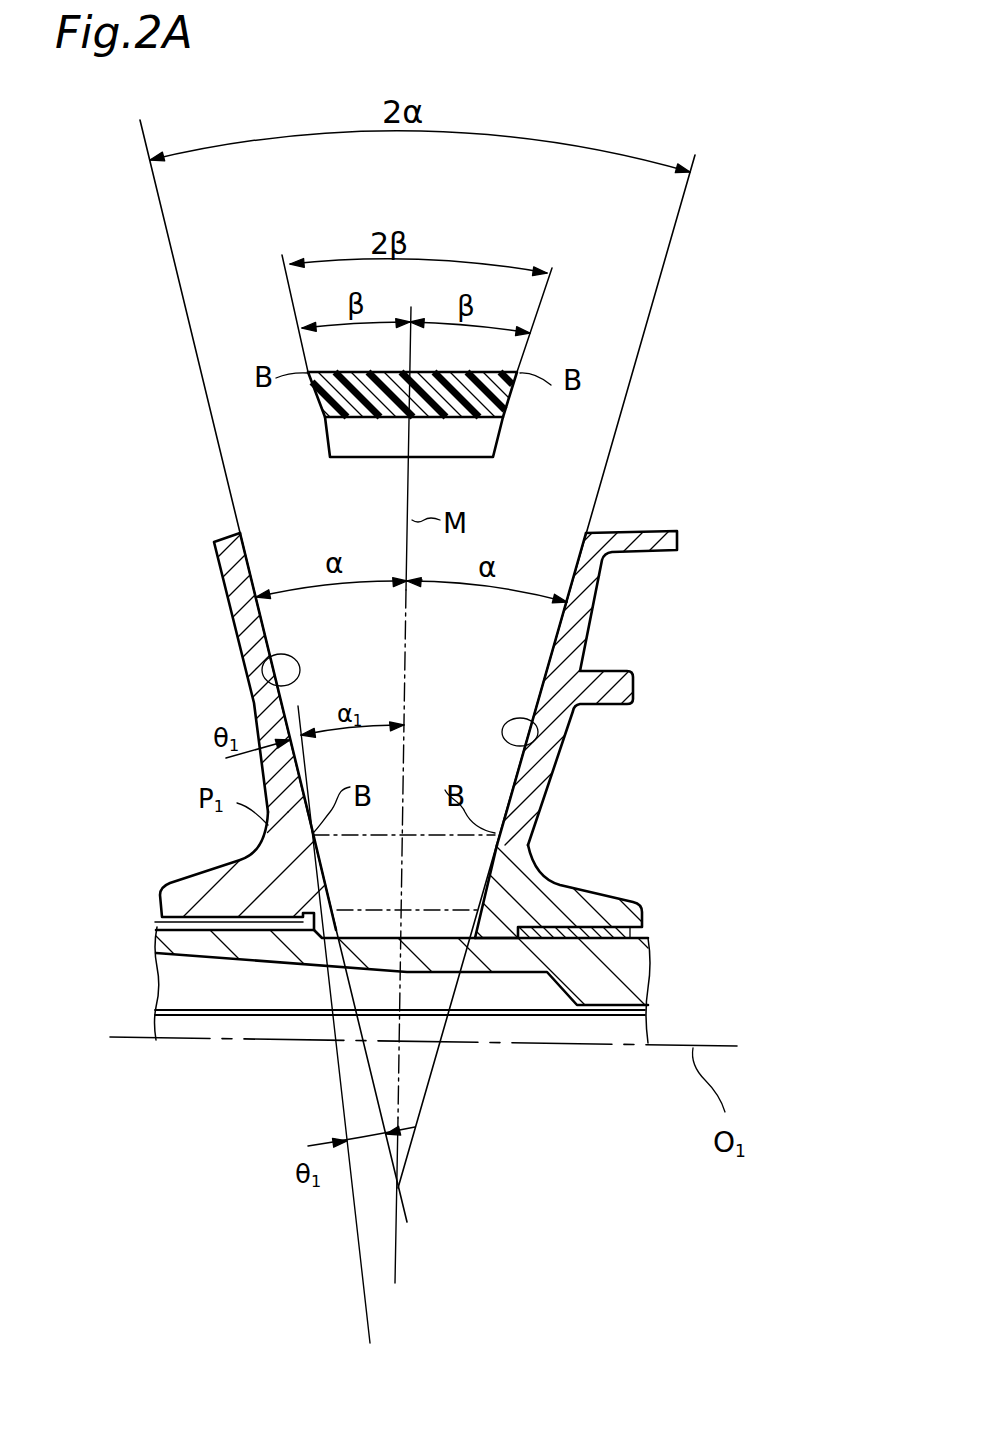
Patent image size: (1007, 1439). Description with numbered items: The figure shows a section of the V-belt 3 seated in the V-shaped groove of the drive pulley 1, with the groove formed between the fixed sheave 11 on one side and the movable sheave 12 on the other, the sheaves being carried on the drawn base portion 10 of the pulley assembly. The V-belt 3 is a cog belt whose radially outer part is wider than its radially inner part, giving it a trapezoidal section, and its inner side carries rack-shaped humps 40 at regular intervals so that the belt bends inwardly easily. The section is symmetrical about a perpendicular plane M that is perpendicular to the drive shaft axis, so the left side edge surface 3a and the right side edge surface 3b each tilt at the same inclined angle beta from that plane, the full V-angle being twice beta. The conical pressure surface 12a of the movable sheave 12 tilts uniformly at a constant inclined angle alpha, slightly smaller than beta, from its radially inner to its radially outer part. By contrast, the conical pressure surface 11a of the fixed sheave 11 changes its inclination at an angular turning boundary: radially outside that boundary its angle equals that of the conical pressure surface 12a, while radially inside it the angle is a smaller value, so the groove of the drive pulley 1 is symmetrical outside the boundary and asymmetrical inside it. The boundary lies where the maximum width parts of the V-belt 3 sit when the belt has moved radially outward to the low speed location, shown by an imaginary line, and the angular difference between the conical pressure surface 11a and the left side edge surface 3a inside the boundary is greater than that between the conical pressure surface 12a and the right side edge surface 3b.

The drive pulley 1 is at (713, 570).
The V-belt 3 is at (492, 385).
The left side edge surface 3a is at (312, 391).
The right side edge surface 3b is at (507, 413).
The base plate 10 is at (220, 943).
The fixed sheave 11 is at (245, 635).
The conical pressure surface of the fixed sheave 11a is at (262, 675).
The movable sheave 12 is at (573, 648).
The conical pressure surface of the movable sheave 12a is at (535, 737).
The rack-shaped humps 40 is at (368, 445).